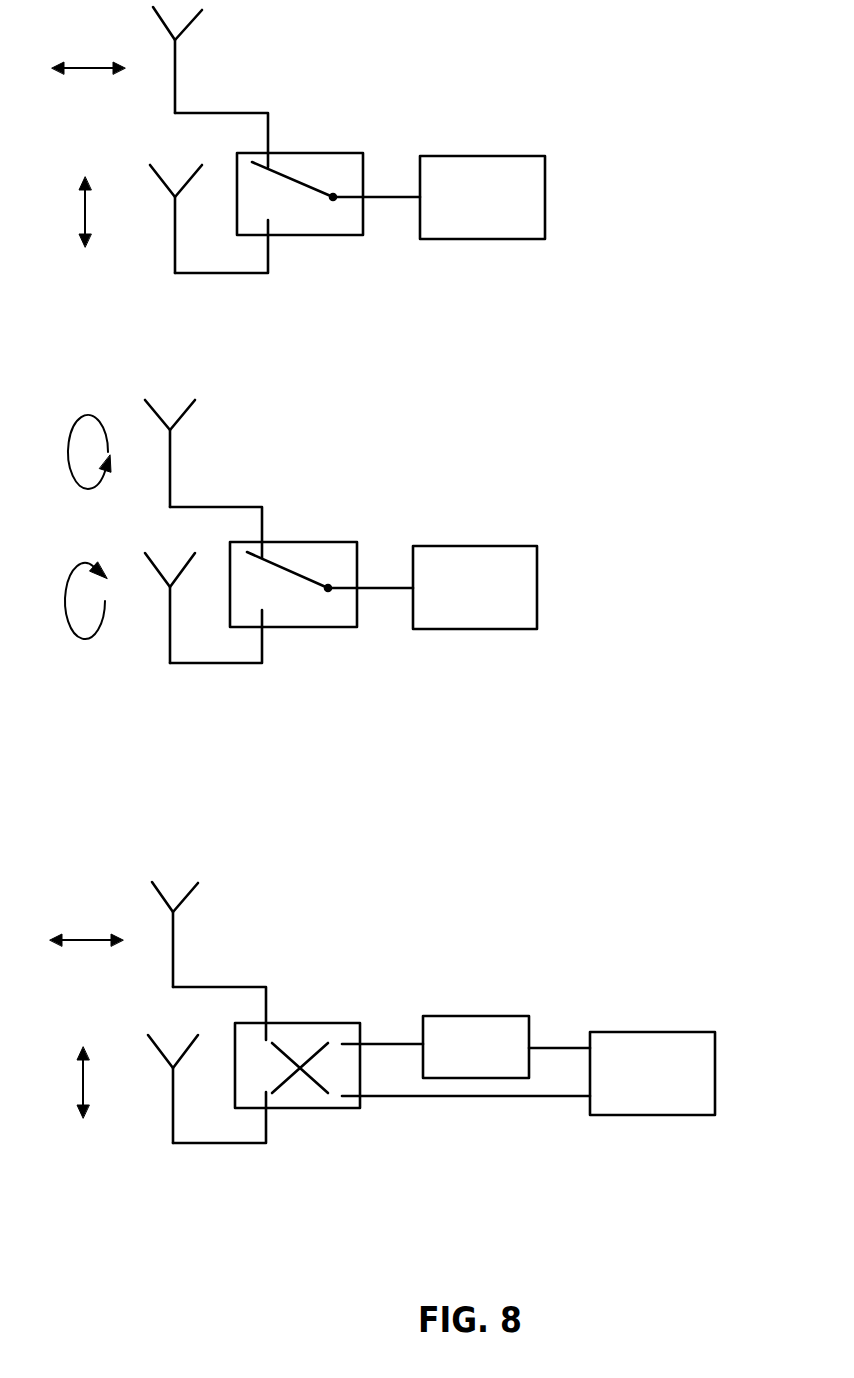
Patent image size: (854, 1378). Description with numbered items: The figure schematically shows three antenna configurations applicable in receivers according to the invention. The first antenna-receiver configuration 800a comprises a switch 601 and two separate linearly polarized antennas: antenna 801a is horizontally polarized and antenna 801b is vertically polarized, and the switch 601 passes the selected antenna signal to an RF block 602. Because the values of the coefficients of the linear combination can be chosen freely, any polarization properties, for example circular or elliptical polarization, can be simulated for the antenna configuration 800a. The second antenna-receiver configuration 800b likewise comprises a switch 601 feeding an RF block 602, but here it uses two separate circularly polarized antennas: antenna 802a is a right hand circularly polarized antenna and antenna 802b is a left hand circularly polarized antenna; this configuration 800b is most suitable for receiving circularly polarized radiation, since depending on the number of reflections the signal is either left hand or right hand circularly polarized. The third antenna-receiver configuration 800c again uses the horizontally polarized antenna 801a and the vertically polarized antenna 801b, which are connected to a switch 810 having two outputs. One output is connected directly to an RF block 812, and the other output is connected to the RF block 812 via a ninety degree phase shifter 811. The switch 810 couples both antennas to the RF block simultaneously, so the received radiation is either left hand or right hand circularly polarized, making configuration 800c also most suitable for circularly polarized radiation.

The antenna-receiver configuration 800a is at (645, 147).
The antenna-receiver configuration 800b is at (640, 532).
The antenna-receiver configuration 800c is at (634, 877).
The horizontally polarized antenna 801a is at (173, 95).
The vertically polarized antenna 801b is at (173, 247).
The right hand circularly polarized antenna 802a is at (168, 482).
The left hand circularly polarized antenna 802b is at (168, 638).
The switch 601 is at (300, 150).
The RF block 602 is at (482, 152).
The switch 810 is at (308, 1022).
The 90° phase shifter 811 is at (478, 1013).
The RF block 812 is at (653, 1030).